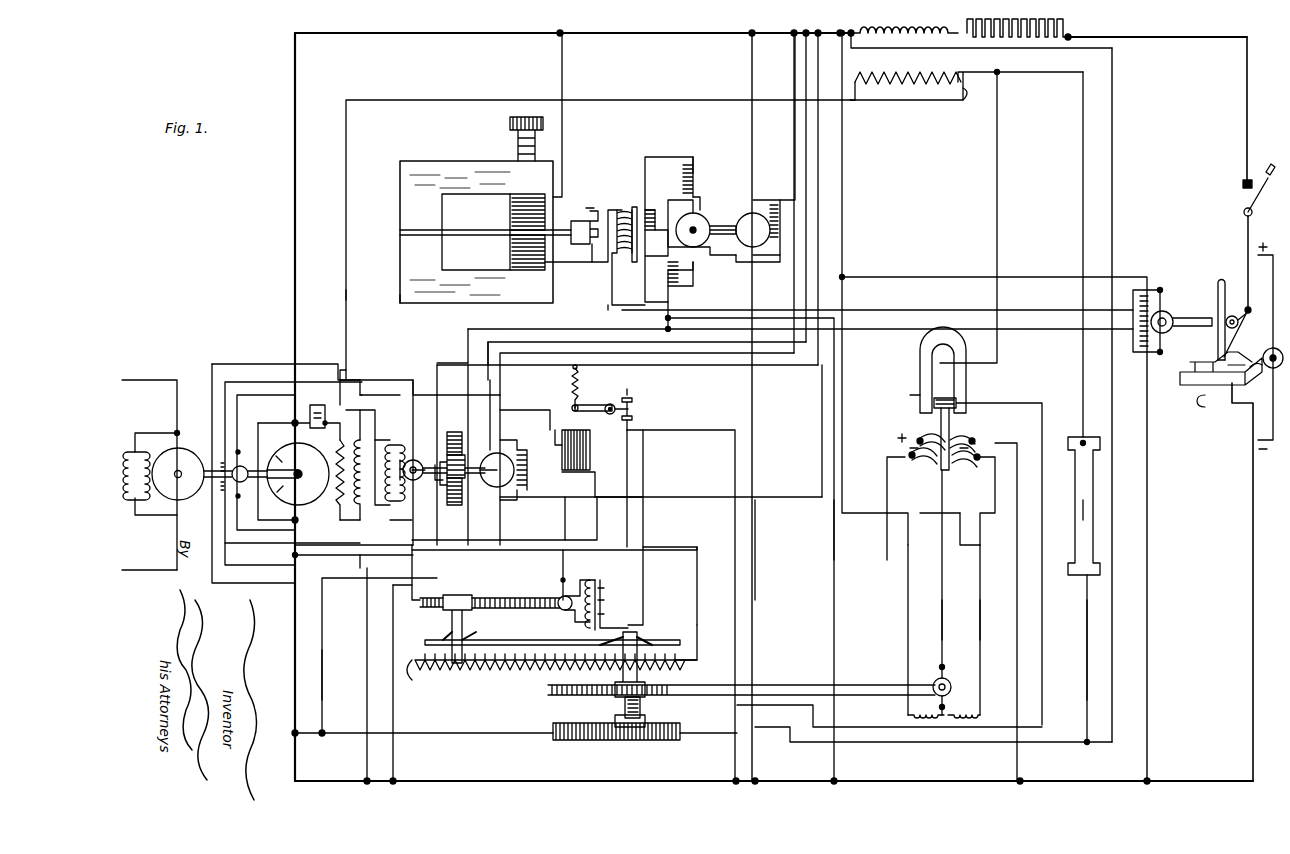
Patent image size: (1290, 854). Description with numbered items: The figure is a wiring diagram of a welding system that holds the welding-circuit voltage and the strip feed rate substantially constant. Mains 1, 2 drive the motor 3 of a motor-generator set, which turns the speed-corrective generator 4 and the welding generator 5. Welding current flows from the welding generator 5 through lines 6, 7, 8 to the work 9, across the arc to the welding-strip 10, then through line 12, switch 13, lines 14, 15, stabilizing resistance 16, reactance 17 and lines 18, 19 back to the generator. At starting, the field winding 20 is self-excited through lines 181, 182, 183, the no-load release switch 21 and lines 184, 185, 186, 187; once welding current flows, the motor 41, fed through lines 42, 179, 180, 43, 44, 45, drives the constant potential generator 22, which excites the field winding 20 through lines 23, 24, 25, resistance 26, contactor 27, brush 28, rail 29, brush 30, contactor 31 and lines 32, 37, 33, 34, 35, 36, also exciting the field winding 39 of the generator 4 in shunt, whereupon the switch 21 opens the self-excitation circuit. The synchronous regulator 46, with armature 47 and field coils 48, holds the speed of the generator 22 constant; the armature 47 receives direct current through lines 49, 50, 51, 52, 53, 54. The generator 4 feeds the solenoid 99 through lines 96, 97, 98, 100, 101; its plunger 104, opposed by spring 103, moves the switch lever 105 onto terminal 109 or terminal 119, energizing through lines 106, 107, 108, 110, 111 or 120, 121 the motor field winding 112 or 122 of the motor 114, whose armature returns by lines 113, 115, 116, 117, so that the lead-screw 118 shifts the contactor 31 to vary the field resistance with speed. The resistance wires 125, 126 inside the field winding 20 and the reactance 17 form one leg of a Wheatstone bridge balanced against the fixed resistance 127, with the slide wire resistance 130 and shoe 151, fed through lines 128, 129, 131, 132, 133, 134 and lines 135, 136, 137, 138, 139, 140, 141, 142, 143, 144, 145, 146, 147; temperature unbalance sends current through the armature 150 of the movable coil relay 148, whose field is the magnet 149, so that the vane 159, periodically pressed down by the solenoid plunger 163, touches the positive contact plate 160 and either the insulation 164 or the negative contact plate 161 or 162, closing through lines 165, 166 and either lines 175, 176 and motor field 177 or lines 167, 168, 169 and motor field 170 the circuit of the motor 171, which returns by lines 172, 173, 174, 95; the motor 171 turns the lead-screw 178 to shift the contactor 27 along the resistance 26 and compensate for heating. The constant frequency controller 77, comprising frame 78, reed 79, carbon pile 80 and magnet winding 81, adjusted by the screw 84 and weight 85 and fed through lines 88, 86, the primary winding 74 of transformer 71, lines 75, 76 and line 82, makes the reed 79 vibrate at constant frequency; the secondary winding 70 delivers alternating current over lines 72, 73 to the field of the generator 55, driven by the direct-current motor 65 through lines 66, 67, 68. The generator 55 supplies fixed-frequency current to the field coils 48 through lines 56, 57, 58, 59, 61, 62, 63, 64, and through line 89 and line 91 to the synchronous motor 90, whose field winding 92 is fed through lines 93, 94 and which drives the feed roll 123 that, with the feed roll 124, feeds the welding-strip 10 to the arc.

The main 1 is at (144, 380).
The main 2 is at (135, 572).
The motor 3 is at (163, 473).
The speed-corrective generator 4 is at (244, 474).
The welding generator 5 is at (280, 475).
The line 6 is at (295, 644).
The line 7 is at (774, 772).
The line 8 is at (1248, 496).
The work 9 is at (1200, 360).
The welding-strip 10 is at (1227, 333).
The line 12 is at (1244, 342).
The switch 13 is at (1240, 201).
The line 14 is at (1246, 128).
The line 15 is at (1156, 26).
The stabilizing resistance 16 is at (1018, 35).
The reactance 17 is at (904, 39).
The line 18 is at (574, 24).
The line 19 is at (294, 246).
The field winding 20 is at (342, 487).
The no-load release switch 21 is at (327, 434).
The constant potential generator 22 is at (418, 487).
The line 23 is at (378, 555).
The line 24 is at (500, 569).
The line 25 is at (698, 588).
The resistance 26 is at (671, 668).
The contactor 27 is at (640, 638).
The brush 28 is at (606, 652).
The rail 29 is at (540, 641).
The brush 30 is at (470, 633).
The contactor 31 is at (450, 629).
The line 32 is at (414, 679).
The line 33 is at (353, 553).
The line 34 is at (380, 392).
The line 35 is at (377, 378).
The line 36 is at (425, 368).
The line 37 is at (379, 655).
The field winding 39 is at (218, 486).
The motor 41 is at (506, 444).
The line 42 is at (366, 695).
The line 43 is at (498, 394).
The line 44 is at (680, 355).
The line 45 is at (791, 133).
The synchronous regulator 46 is at (458, 510).
The armature 47 is at (490, 465).
The field coils 48 is at (461, 469).
The line 49 is at (402, 704).
The line 50 is at (492, 588).
The line 51 is at (421, 493).
The line 52 is at (468, 455).
The line 53 is at (667, 364).
The line 54 is at (818, 365).
The generator 55 is at (693, 210).
The line 56 is at (680, 320).
The line 57 is at (647, 353).
The line 58 is at (487, 345).
The line 59 is at (487, 470).
The line 61 is at (462, 348).
The line 62 is at (528, 330).
The line 63 is at (654, 240).
The line 64 is at (675, 177).
The direct-current motor 65 is at (740, 264).
The line 66 is at (758, 579).
The line 67 is at (766, 266).
The line 68 is at (750, 182).
The secondary winding 70 is at (684, 200).
The transformer 71 is at (635, 242).
The line 72 is at (663, 294).
The line 73 is at (682, 156).
The primary winding 74 is at (626, 201).
The line 75 is at (606, 236).
The line 76 is at (593, 267).
The constant frequency controller 77 is at (476, 232).
The frame 78 is at (400, 303).
The reed 79 is at (468, 230).
The carbon pile 80 is at (538, 212).
The magnet winding 81 is at (546, 252).
The line 82 is at (562, 172).
The adjusting screw 84 is at (513, 147).
The weight 85 is at (584, 226).
The line 86 is at (619, 284).
The line 88 is at (832, 545).
The line 89 is at (800, 337).
The synchronous motor 90 is at (1172, 312).
The line 91 is at (877, 298).
The field winding 92 is at (1139, 321).
The line 93 is at (1150, 496).
The line 94 is at (994, 271).
The line 95 is at (845, 237).
The line 96 is at (236, 540).
The line 97 is at (587, 530).
The line 98 is at (593, 481).
The solenoid 99 is at (590, 440).
The line 100 is at (548, 410).
The line 101 is at (561, 386).
The spring 103 is at (590, 402).
The plunger 104 is at (566, 434).
The switch lever 105 is at (642, 398).
The line 106 is at (734, 534).
The line 107 is at (688, 428).
The line 108 is at (632, 438).
The terminal 109 is at (634, 407).
The line 110 is at (652, 564).
The line 111 is at (615, 616).
The motor field winding 112 is at (615, 601).
The line 113 is at (484, 610).
The motor 114 is at (558, 594).
The line 115 is at (567, 554).
The line 116 is at (720, 496).
The line 117 is at (822, 432).
The lead-screw 118 is at (555, 585).
The terminal 119 is at (634, 420).
The line 120 is at (642, 463).
The line 121 is at (607, 595).
The motor field winding 122 is at (615, 586).
The feed roll 123 is at (1201, 315).
The feed roll 124 is at (1231, 311).
The non-inductively-wound resistance wire 125 is at (335, 465).
The non-inductively-wound resistance wire 126 is at (908, 68).
The fixed resistance 127 is at (1080, 507).
The line 128 is at (307, 734).
The line 129 is at (565, 683).
The slide wire resistance 130 is at (656, 742).
The line 131 is at (963, 744).
The line 132 is at (1120, 726).
The line 133 is at (1083, 395).
The line 134 is at (981, 42).
The line 135 is at (322, 644).
The line 136 is at (264, 590).
The line 137 is at (211, 361).
The line 138 is at (262, 364).
The line 139 is at (340, 370).
The line 140 is at (347, 276).
The line 141 is at (495, 97).
The line 142 is at (969, 86).
The line 143 is at (908, 108).
The line 144 is at (958, 103).
The line 145 is at (1025, 84).
The line 146 is at (1080, 171).
The line 147 is at (1084, 666).
The movable coil relay 148 is at (954, 393).
The magnet 149 is at (914, 392).
The armature 150 is at (988, 559).
The shoe 151 is at (624, 713).
The vane 159 is at (951, 424).
The positive contact plate 160 is at (924, 436).
The negative contact plate 161 is at (959, 466).
The negative contact plate 162 is at (933, 466).
The solenoid plunger 163 is at (974, 446).
The insulation 164 is at (948, 503).
The line 165 is at (1015, 578).
The line 166 is at (1016, 442).
The line 167 is at (998, 518).
The line 168 is at (962, 529).
The line 169 is at (980, 616).
The motor field 170 is at (959, 702).
The motor 171 is at (942, 685).
The line 172 is at (944, 598).
The line 173 is at (885, 543).
The line 174 is at (843, 362).
The line 175 is at (896, 446).
The line 176 is at (907, 578).
The motor field 177 is at (910, 716).
The lead-screw 178 is at (556, 699).
The line 179 is at (447, 572).
The line 180 is at (495, 534).
The line 181 is at (275, 480).
The line 182 is at (298, 474).
The line 183 is at (278, 416).
The line 184 is at (383, 421).
The line 185 is at (394, 527).
The line 186 is at (376, 437).
The line 187 is at (312, 405).